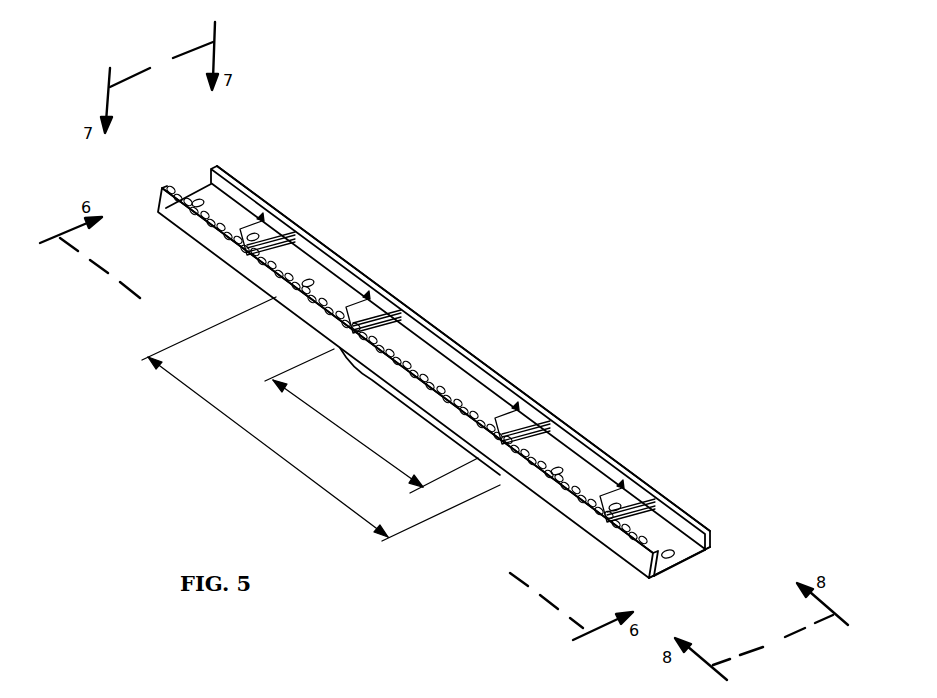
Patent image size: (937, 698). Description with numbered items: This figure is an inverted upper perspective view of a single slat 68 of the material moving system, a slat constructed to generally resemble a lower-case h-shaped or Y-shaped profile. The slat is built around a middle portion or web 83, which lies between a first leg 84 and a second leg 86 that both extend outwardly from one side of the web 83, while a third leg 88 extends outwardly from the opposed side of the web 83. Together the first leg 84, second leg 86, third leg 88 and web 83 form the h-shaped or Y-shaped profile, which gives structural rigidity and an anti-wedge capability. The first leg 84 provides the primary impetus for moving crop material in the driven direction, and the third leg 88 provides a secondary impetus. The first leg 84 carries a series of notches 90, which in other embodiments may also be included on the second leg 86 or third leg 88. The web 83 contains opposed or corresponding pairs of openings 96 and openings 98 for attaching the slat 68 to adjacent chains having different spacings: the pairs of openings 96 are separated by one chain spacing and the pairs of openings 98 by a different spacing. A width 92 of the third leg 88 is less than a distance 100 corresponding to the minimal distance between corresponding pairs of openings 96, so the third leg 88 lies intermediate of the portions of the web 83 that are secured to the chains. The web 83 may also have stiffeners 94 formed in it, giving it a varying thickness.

The slat 68 is at (401, 300).
The web 83 is at (685, 565).
The first leg 84 is at (645, 575).
The second leg 86 is at (712, 543).
The third leg 88 is at (464, 460).
The notches 90 is at (171, 187).
The width 92 is at (345, 430).
The stiffeners 94 is at (513, 412).
The openings 96 is at (607, 504).
The openings 98 is at (668, 551).
The distance 100 is at (277, 453).